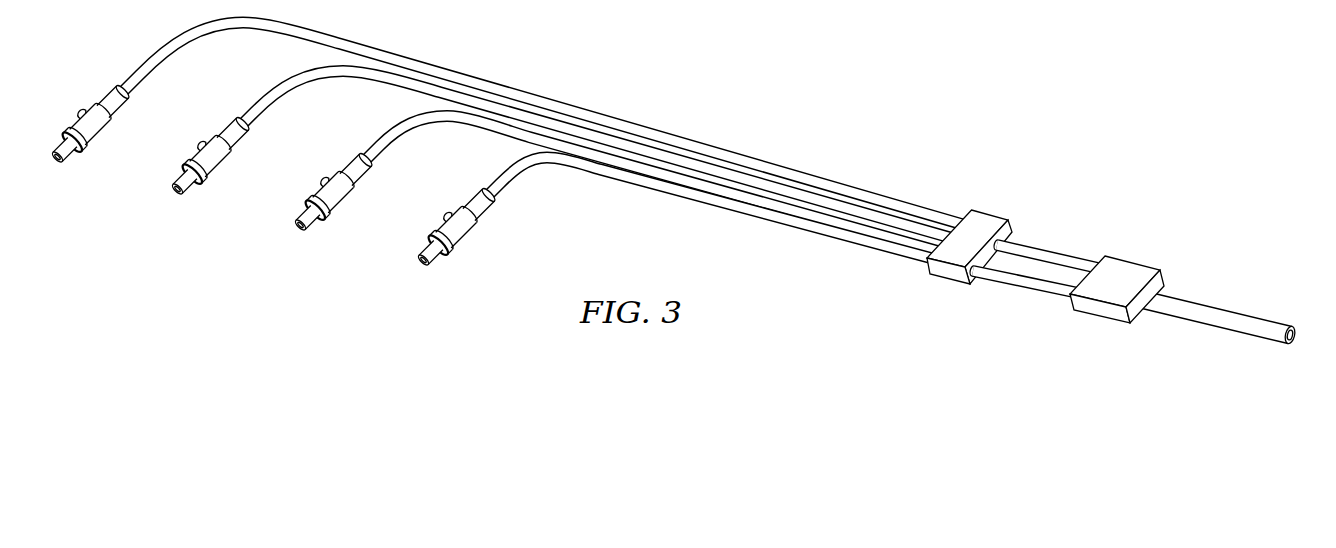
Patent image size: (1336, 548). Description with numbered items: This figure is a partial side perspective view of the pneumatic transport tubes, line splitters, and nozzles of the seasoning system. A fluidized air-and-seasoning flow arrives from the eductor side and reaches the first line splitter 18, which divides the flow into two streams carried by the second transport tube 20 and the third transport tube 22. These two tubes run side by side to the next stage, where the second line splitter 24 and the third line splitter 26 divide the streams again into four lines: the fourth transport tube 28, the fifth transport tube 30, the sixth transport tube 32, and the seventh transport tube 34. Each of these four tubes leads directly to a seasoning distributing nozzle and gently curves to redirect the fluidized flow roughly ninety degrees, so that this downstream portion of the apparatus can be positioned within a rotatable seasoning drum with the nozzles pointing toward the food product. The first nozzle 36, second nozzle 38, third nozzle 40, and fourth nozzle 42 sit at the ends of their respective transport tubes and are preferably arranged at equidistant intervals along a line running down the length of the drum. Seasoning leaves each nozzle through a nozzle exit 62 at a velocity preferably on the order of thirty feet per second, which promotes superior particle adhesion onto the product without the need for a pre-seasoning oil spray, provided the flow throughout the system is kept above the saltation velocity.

The first line splitter 18 is at (1132, 272).
The second transport tube 20 is at (1048, 247).
The third transport tube 22 is at (1025, 287).
The second line splitter 24 is at (987, 225).
The third line splitter 26 is at (952, 273).
The fourth transport tube 28 is at (196, 43).
The fifth transport tube 30 is at (307, 87).
The sixth transport tube 32 is at (433, 123).
The seventh transport tube 34 is at (503, 185).
The first nozzle 36 is at (75, 116).
The second nozzle 38 is at (193, 148).
The third nozzle 40 is at (313, 188).
The fourth nozzle 42 is at (437, 221).
The nozzle exit 62 is at (318, 232).